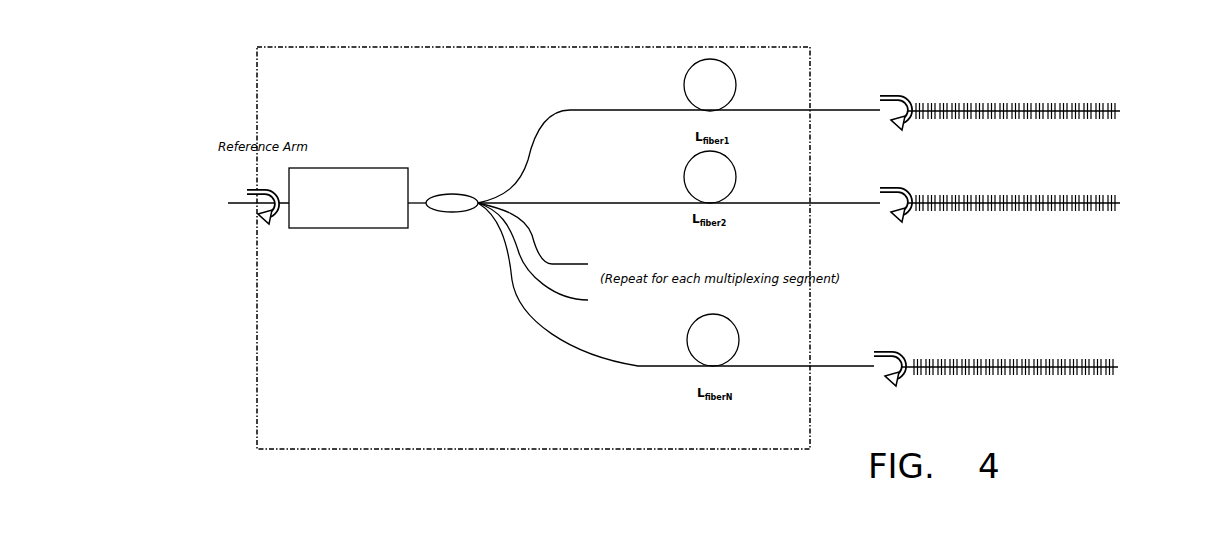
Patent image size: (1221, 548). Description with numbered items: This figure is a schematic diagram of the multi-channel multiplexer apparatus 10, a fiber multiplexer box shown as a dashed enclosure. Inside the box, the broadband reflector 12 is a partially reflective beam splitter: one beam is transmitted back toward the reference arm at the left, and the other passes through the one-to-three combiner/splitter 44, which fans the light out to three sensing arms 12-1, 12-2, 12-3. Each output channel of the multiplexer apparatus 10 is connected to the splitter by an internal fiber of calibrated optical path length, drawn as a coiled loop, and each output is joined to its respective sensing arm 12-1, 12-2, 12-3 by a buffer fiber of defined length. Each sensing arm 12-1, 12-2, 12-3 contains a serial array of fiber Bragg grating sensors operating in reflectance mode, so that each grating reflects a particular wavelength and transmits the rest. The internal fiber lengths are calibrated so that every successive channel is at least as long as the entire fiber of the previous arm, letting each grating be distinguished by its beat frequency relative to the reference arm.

The multi-channel multiplexer apparatus 10 is at (292, 82).
The broadband reflector 12 is at (360, 166).
The 1:3 combiner/splitter 44 is at (460, 213).
The first sensing arm 12-1 is at (1004, 113).
The second sensing arm 12-2 is at (1007, 210).
The third sensing arm 12-3 is at (1001, 366).